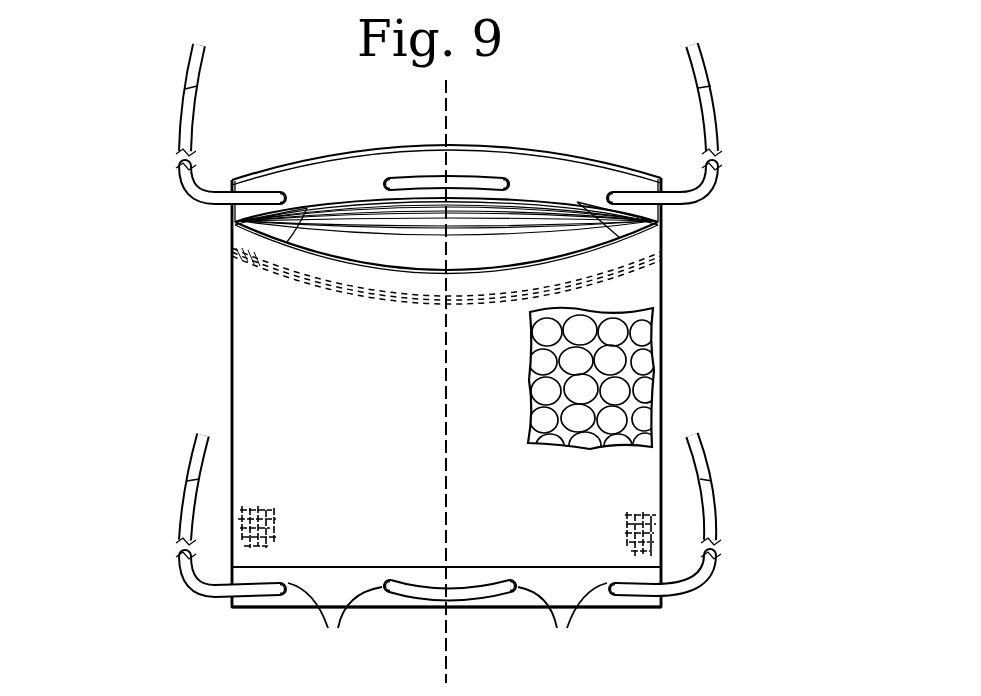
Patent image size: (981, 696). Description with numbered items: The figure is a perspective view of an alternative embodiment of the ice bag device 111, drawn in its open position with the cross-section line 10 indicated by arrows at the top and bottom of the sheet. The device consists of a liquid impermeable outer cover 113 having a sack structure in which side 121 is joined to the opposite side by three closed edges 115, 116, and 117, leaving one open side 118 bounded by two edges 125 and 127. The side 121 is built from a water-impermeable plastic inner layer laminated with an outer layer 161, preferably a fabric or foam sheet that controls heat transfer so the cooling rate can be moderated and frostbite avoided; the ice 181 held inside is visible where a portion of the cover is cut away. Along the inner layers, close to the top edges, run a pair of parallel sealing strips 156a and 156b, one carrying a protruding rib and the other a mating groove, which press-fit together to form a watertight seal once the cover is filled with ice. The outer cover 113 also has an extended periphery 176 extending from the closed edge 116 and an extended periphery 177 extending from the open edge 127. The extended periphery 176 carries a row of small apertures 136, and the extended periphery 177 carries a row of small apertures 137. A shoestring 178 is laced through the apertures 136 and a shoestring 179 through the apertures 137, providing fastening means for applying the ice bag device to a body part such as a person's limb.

The section line 10 is at (446, 80).
The ice bag device 111 is at (196, 330).
The outer cover 113 is at (275, 378).
The closed edge 115 is at (232, 403).
The closed edge 116 is at (407, 565).
The closed edge 117 is at (663, 363).
The open side 118 is at (623, 238).
The side 121 is at (647, 283).
The edge 125 is at (305, 255).
The open edge 127 is at (262, 252).
The row of small apertures 136 is at (447, 623).
The row of small apertures 137 is at (388, 174).
The sealing strip 156a is at (385, 300).
The sealing strip 156b is at (465, 218).
The outer layer 161 is at (622, 468).
The extended periphery 176 is at (603, 600).
The extended periphery 177 is at (257, 182).
The shoestring 178 is at (710, 574).
The shoestring 179 is at (718, 126).
The ice 181 is at (612, 336).